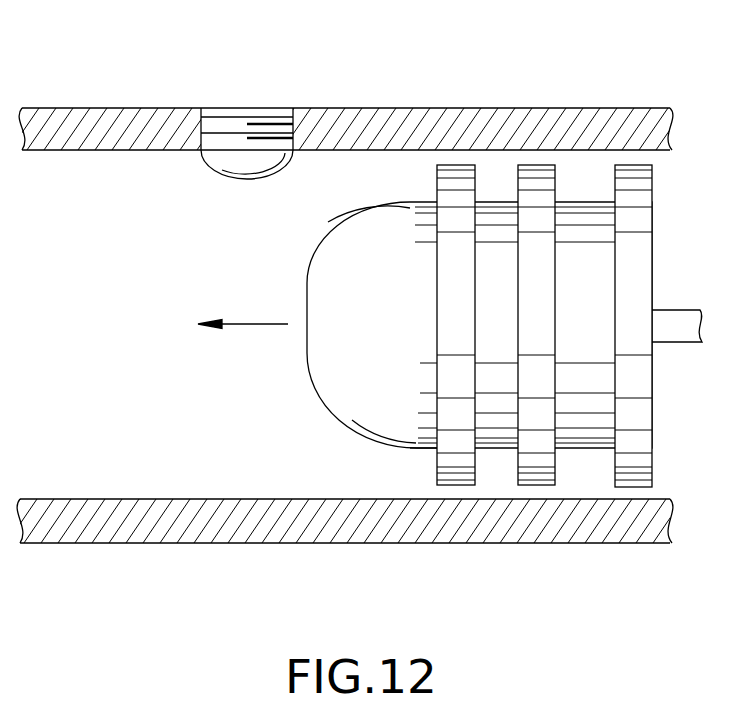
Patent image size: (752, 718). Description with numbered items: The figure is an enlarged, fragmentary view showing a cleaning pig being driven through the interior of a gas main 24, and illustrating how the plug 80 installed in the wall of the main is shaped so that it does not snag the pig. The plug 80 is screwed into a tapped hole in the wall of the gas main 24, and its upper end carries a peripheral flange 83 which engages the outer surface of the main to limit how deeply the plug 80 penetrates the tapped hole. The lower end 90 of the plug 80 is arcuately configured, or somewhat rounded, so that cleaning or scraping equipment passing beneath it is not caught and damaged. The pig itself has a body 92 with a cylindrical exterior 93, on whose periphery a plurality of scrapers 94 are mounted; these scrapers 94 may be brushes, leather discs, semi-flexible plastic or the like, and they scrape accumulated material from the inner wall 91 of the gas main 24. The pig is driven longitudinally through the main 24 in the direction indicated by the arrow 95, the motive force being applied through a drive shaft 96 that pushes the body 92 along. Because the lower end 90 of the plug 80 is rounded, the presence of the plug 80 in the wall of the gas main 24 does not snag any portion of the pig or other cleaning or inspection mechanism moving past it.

The gas main 24 is at (515, 108).
The plug 80 is at (293, 125).
The peripheral flange 83 is at (293, 108).
The lower end 90 is at (218, 163).
The inner wall 91 is at (183, 499).
The body 92 is at (318, 343).
The cylindrical exterior 93 is at (416, 448).
The scrapers 94 is at (475, 480).
The arrow 95 is at (242, 324).
The drive shaft 96 is at (677, 310).